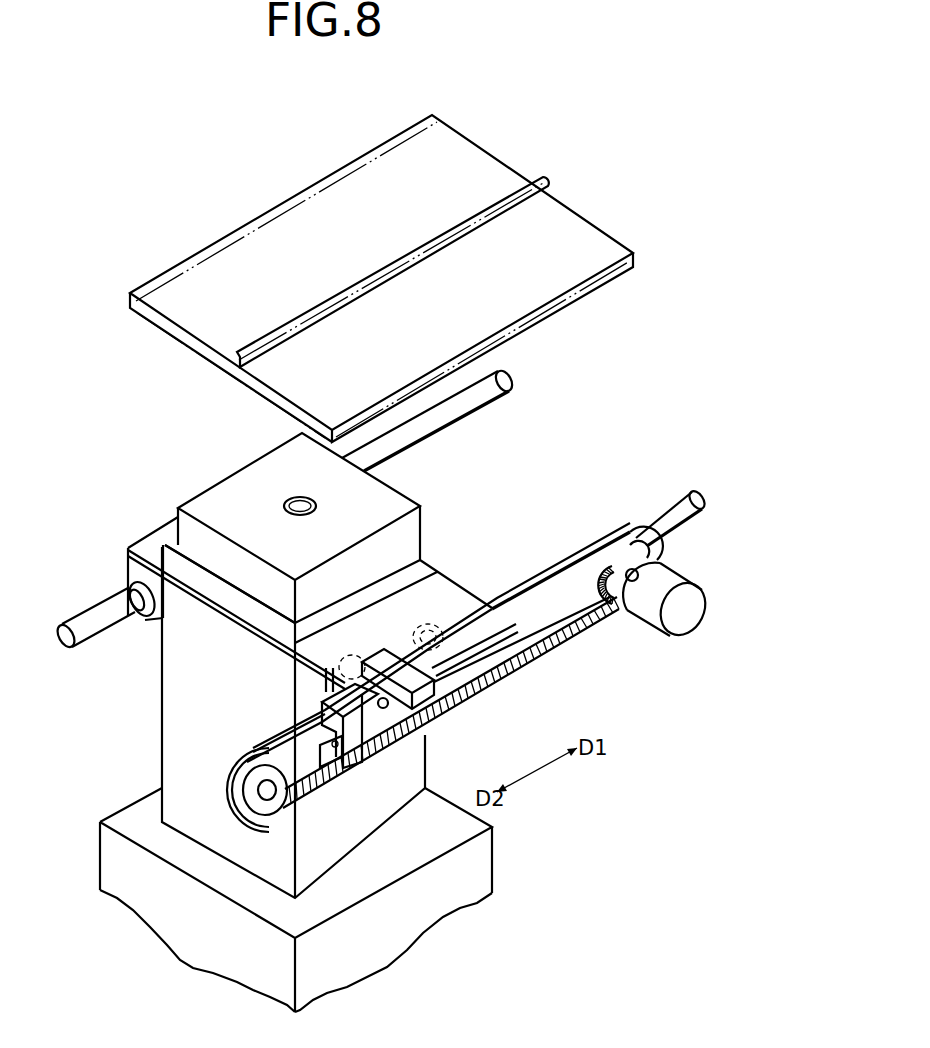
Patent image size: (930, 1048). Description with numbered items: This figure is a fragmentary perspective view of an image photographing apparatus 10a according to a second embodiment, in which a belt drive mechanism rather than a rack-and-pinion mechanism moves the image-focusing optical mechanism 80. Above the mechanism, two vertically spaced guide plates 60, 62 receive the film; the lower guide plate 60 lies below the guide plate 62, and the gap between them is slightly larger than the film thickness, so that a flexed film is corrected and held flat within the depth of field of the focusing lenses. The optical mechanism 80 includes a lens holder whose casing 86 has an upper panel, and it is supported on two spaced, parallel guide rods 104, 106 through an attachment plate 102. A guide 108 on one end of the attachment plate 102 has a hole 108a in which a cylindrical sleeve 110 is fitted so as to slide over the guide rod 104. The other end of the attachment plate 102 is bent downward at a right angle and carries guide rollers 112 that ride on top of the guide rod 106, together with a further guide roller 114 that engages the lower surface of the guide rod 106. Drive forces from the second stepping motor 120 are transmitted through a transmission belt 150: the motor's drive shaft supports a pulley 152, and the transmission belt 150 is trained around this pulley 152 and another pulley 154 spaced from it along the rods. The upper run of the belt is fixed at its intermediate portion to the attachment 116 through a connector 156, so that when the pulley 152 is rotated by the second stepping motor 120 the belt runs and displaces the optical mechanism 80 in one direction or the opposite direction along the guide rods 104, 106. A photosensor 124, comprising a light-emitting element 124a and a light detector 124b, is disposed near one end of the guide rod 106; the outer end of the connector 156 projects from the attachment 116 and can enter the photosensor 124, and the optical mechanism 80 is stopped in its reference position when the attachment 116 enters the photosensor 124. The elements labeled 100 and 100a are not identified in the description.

The image photographing apparatus 10a is at (393, 278).
The guide plate 60 is at (600, 238).
The guide plate 62 is at (556, 176).
The image-focusing optical mechanism 80 is at (126, 521).
The casing 86 is at (178, 722).
The slide block 100 is at (390, 497).
The hole 100a is at (301, 500).
The attachment plate 102 is at (220, 608).
The guide rod 104 is at (467, 413).
The guide rod 106 is at (675, 498).
The guide 108 is at (137, 567).
The hole 108a is at (150, 613).
The cylindrical sleeve 110 is at (124, 593).
The guide rollers 112 is at (426, 622).
The pin 114 is at (390, 708).
The attachment 116 is at (453, 592).
The second stepping motor 120 is at (652, 613).
The photosensor 124 is at (360, 778).
The light-emitting element 124a is at (333, 700).
The light detector 124b is at (342, 770).
The transmission belt 150 is at (555, 585).
The pulley 152 is at (647, 557).
The pulley 154 is at (268, 812).
The connector 156 is at (392, 662).